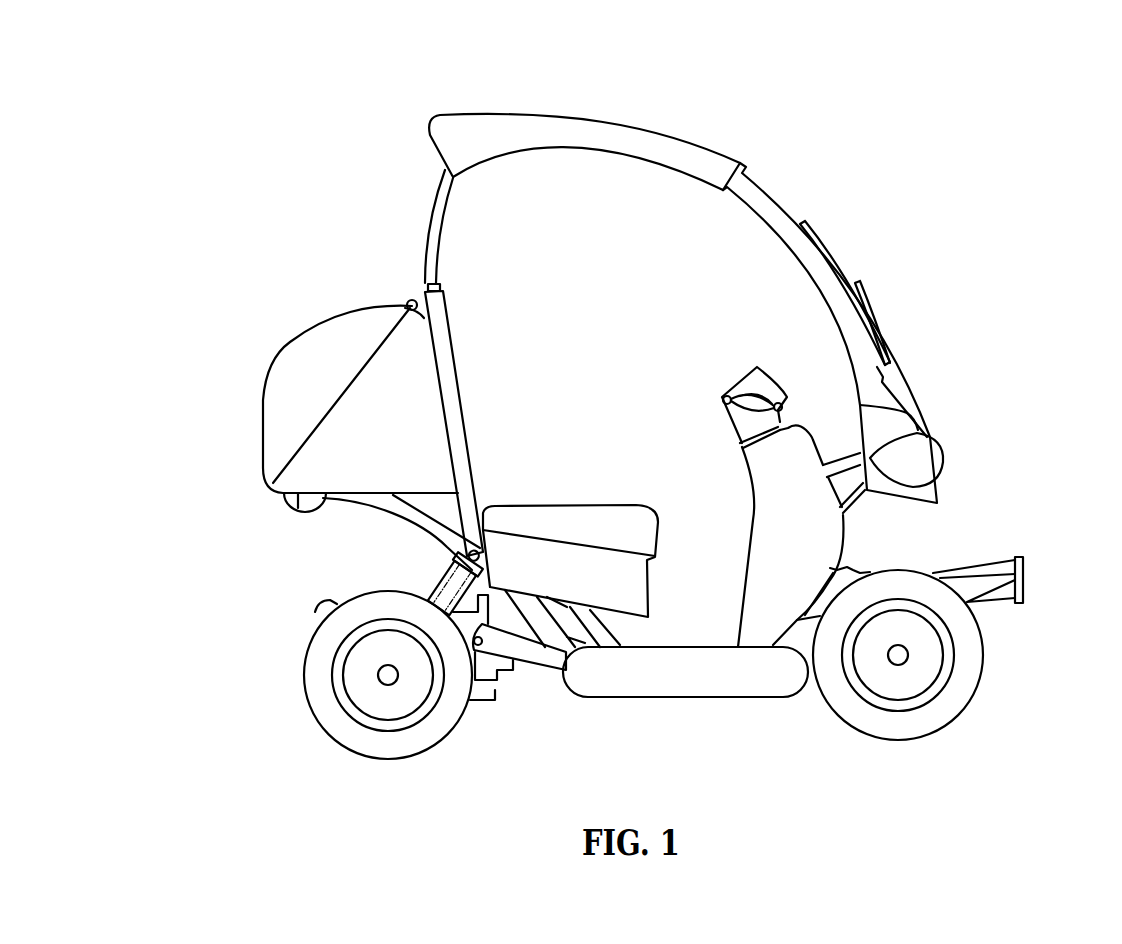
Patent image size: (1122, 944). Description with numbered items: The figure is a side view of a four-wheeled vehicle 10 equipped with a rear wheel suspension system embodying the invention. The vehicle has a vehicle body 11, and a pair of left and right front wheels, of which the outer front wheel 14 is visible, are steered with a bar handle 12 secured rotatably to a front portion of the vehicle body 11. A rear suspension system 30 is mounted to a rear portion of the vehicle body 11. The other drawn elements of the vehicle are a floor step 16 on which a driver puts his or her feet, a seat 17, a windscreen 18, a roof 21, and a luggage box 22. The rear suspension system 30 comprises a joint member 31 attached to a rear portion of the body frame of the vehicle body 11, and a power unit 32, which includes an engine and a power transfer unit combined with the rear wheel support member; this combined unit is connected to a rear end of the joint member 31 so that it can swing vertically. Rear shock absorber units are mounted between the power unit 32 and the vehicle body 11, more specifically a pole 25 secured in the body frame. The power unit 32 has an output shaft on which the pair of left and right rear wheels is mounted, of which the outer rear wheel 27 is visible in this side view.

The four-wheeled vehicle 10 is at (975, 163).
The vehicle body 11 is at (740, 716).
The bar handle 12 is at (727, 397).
The front wheel 14 is at (987, 657).
The floor step 16 is at (697, 647).
The seat 17 is at (572, 508).
The windscreen 18 is at (797, 190).
The roof 21 is at (601, 118).
The luggage box 22 is at (290, 342).
The pole 25 is at (458, 380).
The rear wheel 27 is at (300, 680).
The rear suspension system 30 is at (412, 566).
The joint member 31 is at (530, 660).
The power unit 32 is at (490, 683).